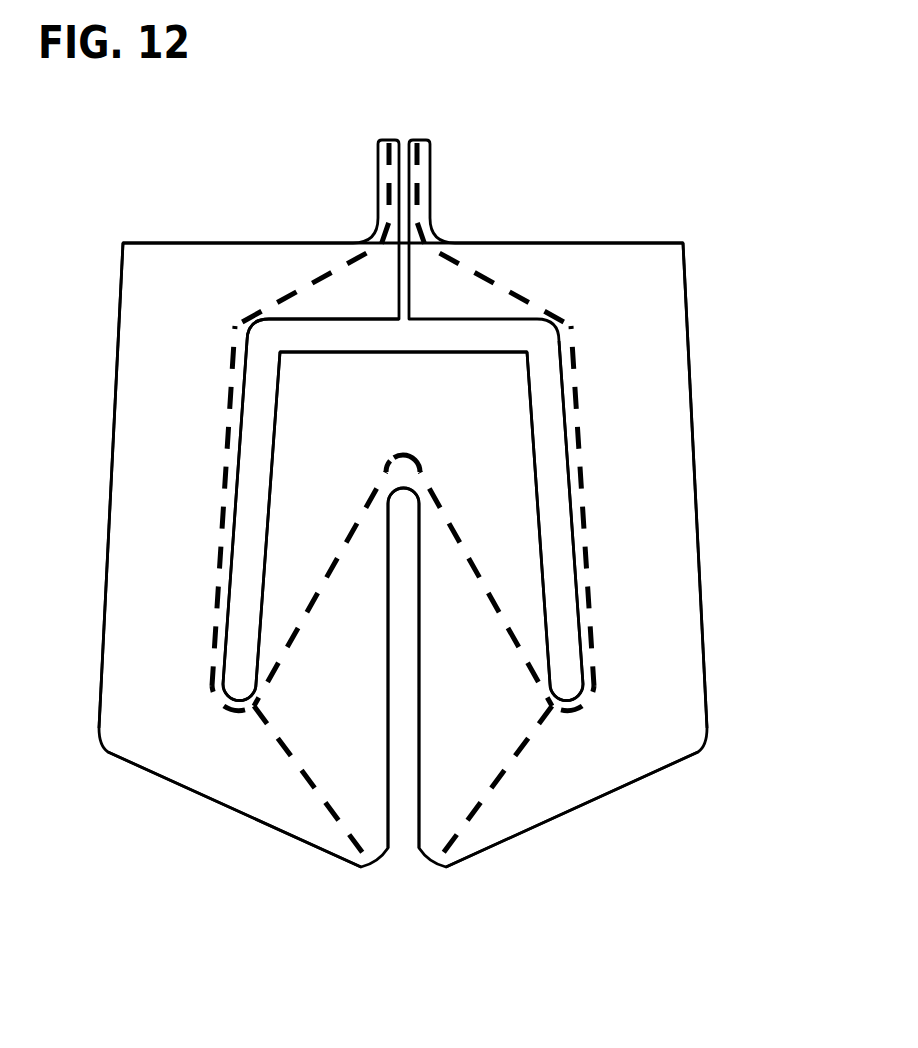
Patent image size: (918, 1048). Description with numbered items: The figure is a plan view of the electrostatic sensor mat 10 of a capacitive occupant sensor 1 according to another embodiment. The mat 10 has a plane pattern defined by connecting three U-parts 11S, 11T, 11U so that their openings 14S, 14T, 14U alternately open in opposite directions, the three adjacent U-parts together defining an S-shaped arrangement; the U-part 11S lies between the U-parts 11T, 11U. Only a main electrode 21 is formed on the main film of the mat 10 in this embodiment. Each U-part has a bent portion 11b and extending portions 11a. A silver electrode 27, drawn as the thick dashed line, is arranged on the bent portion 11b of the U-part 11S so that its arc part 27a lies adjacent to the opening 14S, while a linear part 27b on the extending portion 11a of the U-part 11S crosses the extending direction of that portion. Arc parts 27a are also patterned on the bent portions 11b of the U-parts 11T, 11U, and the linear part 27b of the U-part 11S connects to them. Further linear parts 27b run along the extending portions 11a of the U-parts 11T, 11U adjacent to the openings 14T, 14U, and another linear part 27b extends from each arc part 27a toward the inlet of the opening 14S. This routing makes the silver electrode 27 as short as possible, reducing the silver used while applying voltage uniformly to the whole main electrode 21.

The occupant sensor 1 is at (636, 220).
The electrostatic sensor mat 10 is at (107, 359).
The main electrode 21 is at (637, 297).
The U-part 11S is at (479, 342).
The U-part 11T is at (178, 800).
The U-part 11U is at (647, 790).
The extending portion 11a is at (173, 472).
The bent portion 11b is at (400, 415).
The opening 14S is at (403, 690).
The opening 14T is at (248, 583).
The opening 14U is at (555, 548).
The silver electrode 27 is at (580, 353).
The arc part 27a is at (390, 462).
The linear part 27b is at (230, 437).